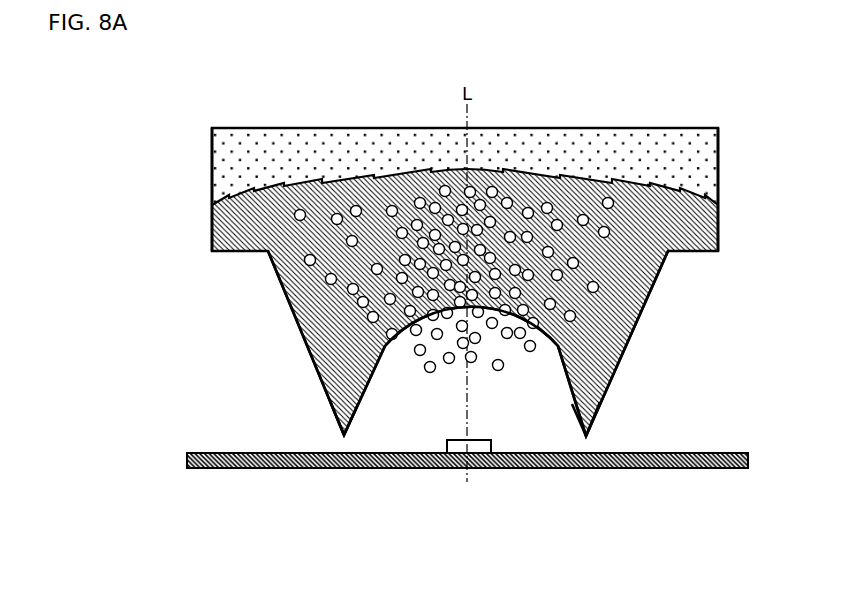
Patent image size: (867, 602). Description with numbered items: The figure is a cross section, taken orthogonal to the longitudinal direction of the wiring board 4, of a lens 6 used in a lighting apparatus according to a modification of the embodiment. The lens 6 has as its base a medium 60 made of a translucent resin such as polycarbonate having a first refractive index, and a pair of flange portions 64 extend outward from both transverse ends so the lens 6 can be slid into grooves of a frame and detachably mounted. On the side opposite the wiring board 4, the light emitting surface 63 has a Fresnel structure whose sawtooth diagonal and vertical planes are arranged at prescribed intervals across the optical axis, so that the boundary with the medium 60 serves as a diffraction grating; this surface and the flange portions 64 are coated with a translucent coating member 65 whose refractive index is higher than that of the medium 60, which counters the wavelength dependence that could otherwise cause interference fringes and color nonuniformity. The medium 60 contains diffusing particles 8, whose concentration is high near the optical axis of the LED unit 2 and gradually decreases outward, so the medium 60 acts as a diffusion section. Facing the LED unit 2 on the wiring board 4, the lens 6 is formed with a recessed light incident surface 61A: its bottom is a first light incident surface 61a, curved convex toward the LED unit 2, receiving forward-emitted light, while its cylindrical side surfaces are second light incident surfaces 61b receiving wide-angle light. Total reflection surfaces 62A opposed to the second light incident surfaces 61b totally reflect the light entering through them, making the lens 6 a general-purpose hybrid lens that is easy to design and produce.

The lens 6 is at (128, 100).
The flange portions 64 is at (205, 153).
The light emitting surface 63 is at (533, 172).
The translucent coating member 65 is at (650, 146).
The medium 60 is at (638, 290).
The diffusing particles 8 is at (347, 289).
The total reflection surfaces 62A is at (307, 366).
The second light incident surfaces 61b is at (352, 412).
The first light incident surface 61a is at (424, 382).
The recessed light incident surface 61A is at (393, 409).
The LED unit 2 is at (479, 450).
The wiring board 4 is at (653, 470).